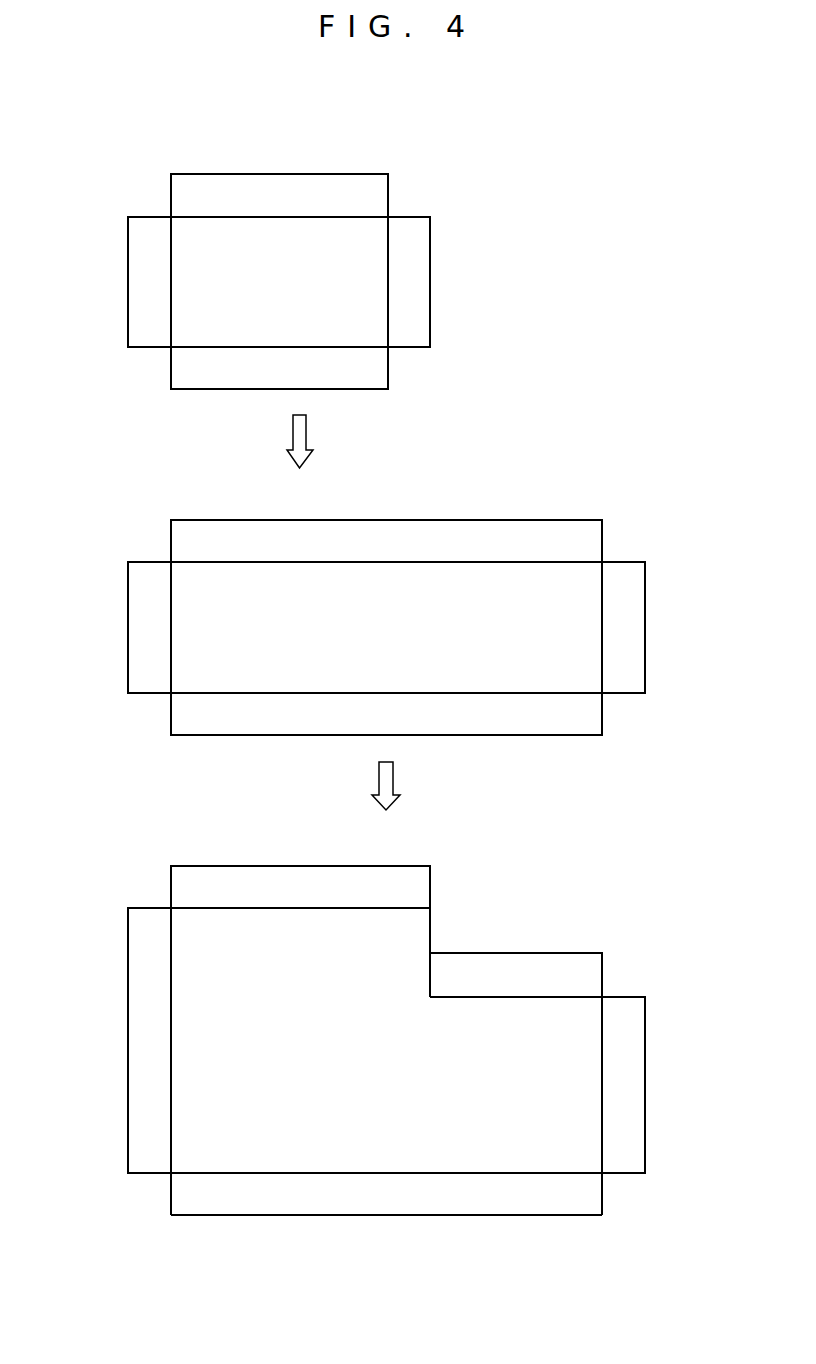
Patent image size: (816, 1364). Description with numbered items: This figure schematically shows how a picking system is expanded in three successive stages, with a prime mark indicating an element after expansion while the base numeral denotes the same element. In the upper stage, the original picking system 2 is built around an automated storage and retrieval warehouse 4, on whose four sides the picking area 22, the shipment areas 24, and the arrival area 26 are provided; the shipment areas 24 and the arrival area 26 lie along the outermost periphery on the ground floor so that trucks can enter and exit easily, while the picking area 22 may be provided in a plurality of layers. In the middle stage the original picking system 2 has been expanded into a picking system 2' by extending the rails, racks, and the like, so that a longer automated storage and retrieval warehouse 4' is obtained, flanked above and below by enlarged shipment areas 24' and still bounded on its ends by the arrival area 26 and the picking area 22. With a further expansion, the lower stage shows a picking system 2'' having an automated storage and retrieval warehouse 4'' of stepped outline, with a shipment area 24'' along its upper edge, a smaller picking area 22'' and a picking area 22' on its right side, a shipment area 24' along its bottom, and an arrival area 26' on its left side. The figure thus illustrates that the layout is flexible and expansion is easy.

The picking system 2 is at (303, 283).
The automated storage and retrieval warehouse 4 is at (303, 283).
The picking area 22 is at (492, 455).
The shipment area 24 is at (279, 283).
The arrival area 26 is at (227, 455).
The picking system after expansion 2' is at (414, 643).
The automated storage and retrieval warehouse after expansion 4' is at (414, 614).
The shipment area after expansion 24' is at (386, 868).
The picking system after further expansion 2'' is at (418, 1052).
The automated storage and retrieval warehouse after further expansion 4'' is at (418, 1014).
The picking area after further expansion 22'' is at (516, 1059).
The picking area after expansion 22' is at (573, 1085).
The shipment area after further expansion 24'' is at (300, 1014).
The arrival area after expansion 26' is at (248, 1040).